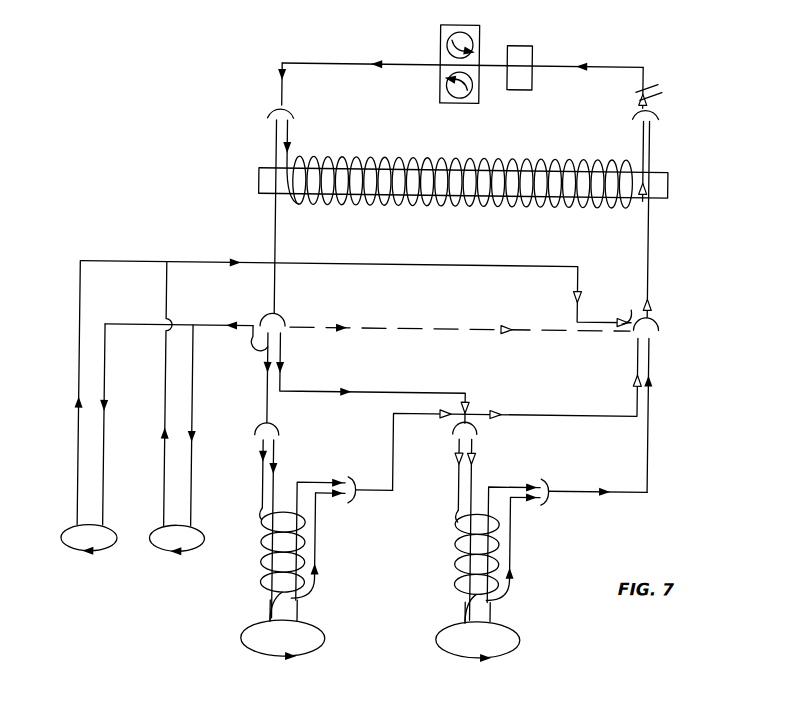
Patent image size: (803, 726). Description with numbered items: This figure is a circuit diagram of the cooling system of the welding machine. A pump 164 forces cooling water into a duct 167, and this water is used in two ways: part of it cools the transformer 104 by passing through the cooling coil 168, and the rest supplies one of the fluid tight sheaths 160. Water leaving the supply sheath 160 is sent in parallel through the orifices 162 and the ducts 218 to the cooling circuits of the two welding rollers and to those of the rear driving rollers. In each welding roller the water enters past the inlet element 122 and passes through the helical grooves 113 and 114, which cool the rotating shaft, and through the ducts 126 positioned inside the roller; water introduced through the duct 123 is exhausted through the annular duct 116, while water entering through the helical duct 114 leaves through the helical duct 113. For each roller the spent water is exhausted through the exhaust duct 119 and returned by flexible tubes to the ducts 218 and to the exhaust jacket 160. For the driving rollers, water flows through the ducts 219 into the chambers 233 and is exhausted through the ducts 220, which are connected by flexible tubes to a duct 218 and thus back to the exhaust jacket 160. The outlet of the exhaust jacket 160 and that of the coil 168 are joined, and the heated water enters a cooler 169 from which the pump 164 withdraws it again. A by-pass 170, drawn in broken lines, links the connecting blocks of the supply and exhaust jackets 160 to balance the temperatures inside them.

The transformer 104 is at (666, 183).
The helical groove 113 is at (321, 545).
The helical groove 114 is at (264, 567).
The annular duct 116 is at (321, 583).
The exhaust duct 119 is at (364, 469).
The inlet valve 122 is at (277, 428).
The duct 123 is at (273, 609).
The duct 126 is at (247, 641).
The fluid tight sheath 160 is at (271, 228).
The orifice 162 is at (281, 315).
The pump 164 is at (437, 54).
The duct 167 is at (333, 61).
The cooling coil 168 is at (350, 160).
The cooler 169 is at (529, 56).
The by-pass 170 is at (413, 325).
The duct 218 is at (254, 342).
The duct 219 is at (119, 468).
The duct 220 is at (78, 477).
The chamber 233 is at (151, 552).